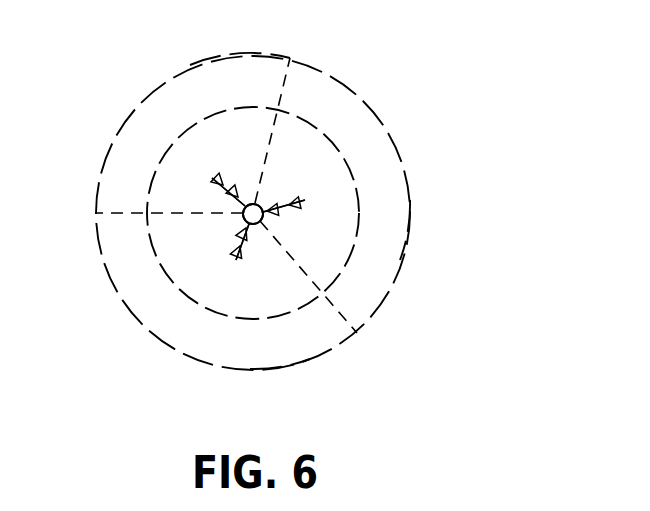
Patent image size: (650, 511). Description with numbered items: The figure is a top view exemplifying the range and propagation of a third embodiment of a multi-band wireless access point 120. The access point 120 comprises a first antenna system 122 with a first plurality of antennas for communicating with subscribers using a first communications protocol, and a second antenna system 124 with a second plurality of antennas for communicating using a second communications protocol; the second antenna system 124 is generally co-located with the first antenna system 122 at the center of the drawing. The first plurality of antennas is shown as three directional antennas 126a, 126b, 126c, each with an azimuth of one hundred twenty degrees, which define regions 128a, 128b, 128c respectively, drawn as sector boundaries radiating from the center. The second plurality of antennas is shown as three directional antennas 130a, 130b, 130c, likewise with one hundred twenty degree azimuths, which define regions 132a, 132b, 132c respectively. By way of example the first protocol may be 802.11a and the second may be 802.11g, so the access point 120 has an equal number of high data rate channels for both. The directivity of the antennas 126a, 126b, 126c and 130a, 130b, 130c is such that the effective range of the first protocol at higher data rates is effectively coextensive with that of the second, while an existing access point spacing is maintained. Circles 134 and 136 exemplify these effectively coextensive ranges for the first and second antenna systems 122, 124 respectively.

The multi-band wireless access point 120 is at (458, 108).
The first antenna system 122 is at (263, 217).
The second antenna system 124 is at (253, 214).
The directional antenna 126a is at (284, 203).
The directional antenna 126b is at (238, 198).
The directional antenna 126c is at (240, 234).
The region 128a is at (322, 262).
The region 128b is at (240, 117).
The region 128c is at (192, 275).
The directional antenna 130a is at (298, 199).
The directional antenna 130b is at (214, 179).
The directional antenna 130c is at (236, 260).
The region 132a is at (409, 215).
The region 132b is at (199, 95).
The region 132c is at (288, 360).
The circle 134 is at (345, 167).
The circle 136 is at (356, 93).